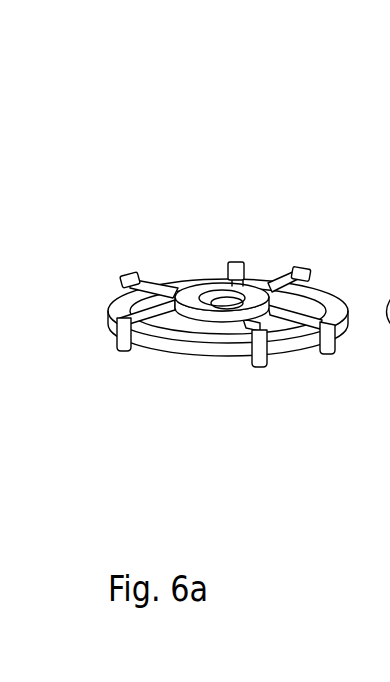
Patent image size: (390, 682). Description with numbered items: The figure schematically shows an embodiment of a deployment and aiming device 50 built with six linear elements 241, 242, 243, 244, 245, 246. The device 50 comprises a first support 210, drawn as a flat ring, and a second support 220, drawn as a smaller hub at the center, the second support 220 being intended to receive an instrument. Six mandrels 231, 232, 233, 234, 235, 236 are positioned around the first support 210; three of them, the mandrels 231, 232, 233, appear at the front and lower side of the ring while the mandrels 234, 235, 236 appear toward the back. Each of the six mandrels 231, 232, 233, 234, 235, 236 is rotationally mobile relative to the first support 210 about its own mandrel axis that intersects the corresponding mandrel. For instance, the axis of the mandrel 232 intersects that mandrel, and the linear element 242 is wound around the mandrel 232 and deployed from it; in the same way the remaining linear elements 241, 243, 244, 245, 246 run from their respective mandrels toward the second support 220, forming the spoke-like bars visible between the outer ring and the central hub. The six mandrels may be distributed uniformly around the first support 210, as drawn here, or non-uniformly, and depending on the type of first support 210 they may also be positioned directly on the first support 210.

The deployment and aiming device 50 is at (130, 59).
The first support 210 is at (182, 345).
The second support 220 is at (203, 245).
The mandrel 231 is at (112, 344).
The mandrel 232 is at (263, 368).
The mandrel 233 is at (335, 356).
The mandrel 234 is at (307, 276).
The mandrel 235 is at (232, 262).
The mandrel 236 is at (125, 277).
The linear element 241 is at (146, 343).
The linear element 242 is at (222, 334).
The linear element 243 is at (298, 337).
The linear element 244 is at (284, 279).
The linear element 245 is at (212, 277).
The linear element 246 is at (160, 273).